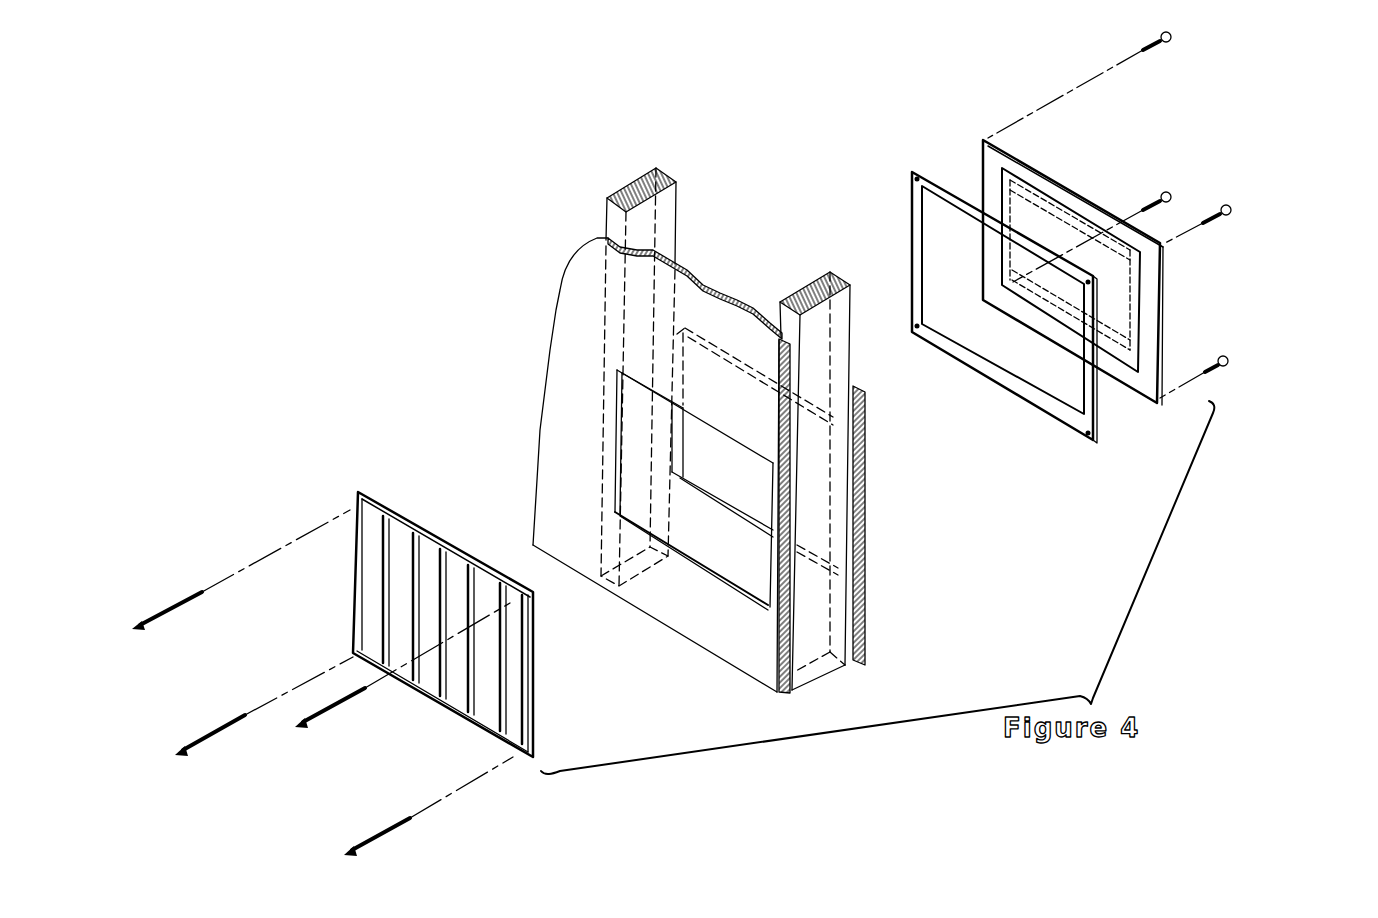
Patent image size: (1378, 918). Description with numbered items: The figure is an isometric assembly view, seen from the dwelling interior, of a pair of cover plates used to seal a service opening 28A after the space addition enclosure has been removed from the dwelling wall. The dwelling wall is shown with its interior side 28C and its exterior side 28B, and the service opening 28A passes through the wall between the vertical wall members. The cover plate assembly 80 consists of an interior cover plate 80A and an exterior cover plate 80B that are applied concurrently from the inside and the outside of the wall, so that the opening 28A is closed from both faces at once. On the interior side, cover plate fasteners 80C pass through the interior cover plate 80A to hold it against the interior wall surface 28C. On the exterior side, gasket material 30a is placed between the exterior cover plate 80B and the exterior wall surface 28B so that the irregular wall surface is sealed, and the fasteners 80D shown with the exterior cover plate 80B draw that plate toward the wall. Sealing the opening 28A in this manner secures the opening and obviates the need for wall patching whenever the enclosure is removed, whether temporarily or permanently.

The service opening 28A is at (627, 188).
The exterior dwelling wall surface 28B is at (867, 453).
The interior dwelling wall surface 28C is at (590, 275).
The gasket material 30a is at (1097, 417).
The window assembly 80 is at (1037, 577).
The interior cover plate 80A is at (402, 580).
The exterior cover plate 80B is at (1147, 263).
The cover plate fasteners 80C is at (171, 606).
The fastening screws 80D is at (1233, 212).